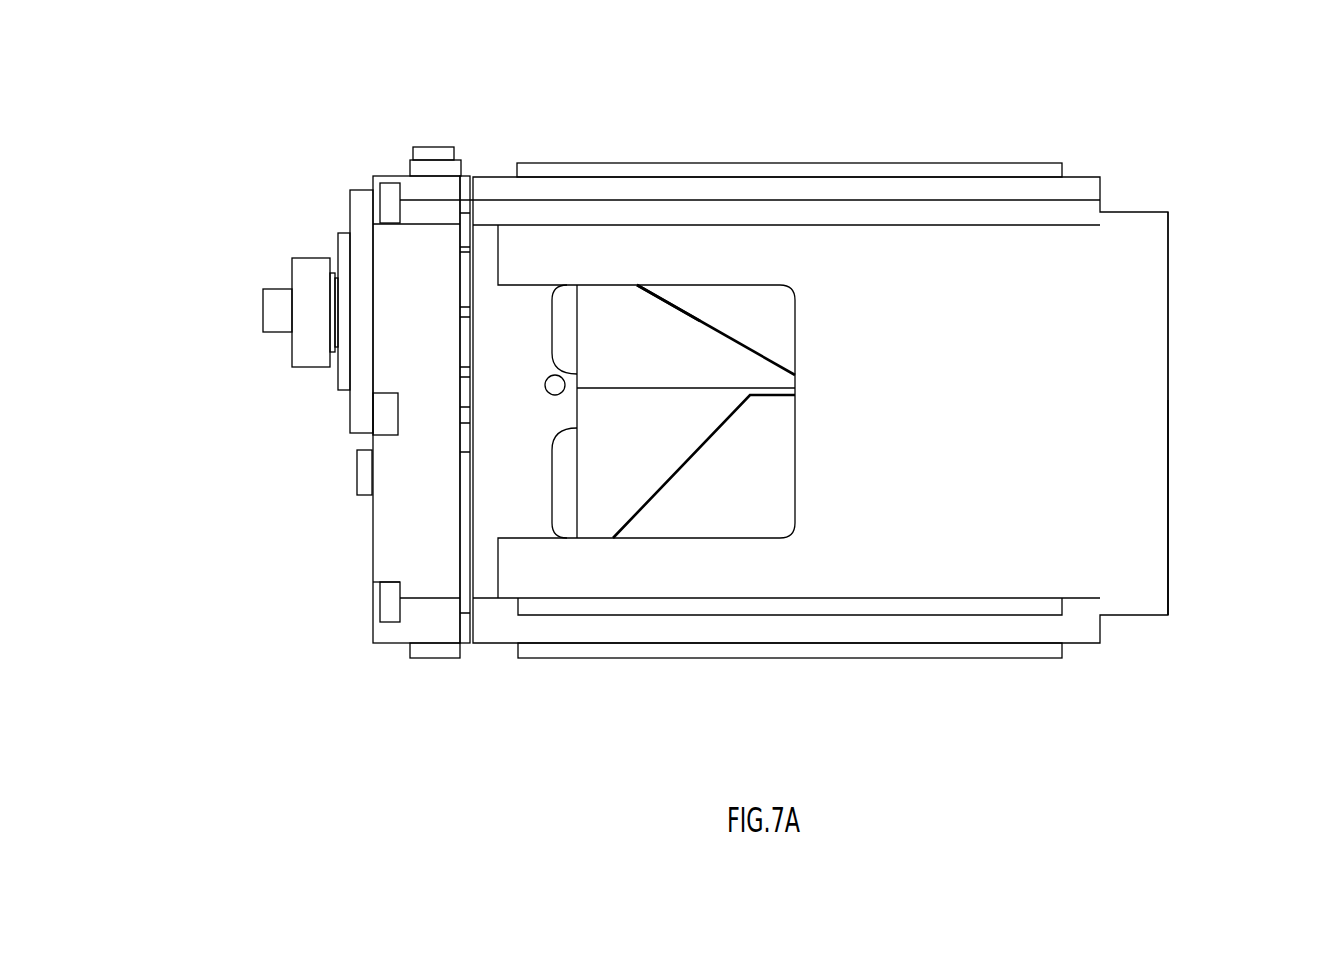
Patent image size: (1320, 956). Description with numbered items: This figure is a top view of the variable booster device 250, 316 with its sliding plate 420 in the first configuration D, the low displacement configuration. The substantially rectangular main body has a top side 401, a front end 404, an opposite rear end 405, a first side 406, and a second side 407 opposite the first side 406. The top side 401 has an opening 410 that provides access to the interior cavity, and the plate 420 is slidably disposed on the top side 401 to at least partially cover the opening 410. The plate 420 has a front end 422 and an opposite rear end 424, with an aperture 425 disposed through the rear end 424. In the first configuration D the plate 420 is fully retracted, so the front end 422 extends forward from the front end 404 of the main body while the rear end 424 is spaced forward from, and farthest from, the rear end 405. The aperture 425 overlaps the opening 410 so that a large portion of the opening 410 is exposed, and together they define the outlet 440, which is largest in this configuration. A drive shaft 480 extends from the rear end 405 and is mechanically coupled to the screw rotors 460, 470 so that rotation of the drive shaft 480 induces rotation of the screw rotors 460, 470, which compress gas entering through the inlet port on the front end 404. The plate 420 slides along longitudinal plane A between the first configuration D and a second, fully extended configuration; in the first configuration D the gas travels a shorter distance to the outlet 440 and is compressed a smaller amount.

The variable booster device 250 is at (215, 138).
The variable booster device 316 is at (293, 127).
The top side 401 is at (193, 213).
The front end 404 is at (787, 409).
The rear end 405 is at (295, 465).
The first side 406 is at (742, 143).
The second side 407 is at (700, 678).
The opening 410 is at (585, 413).
The sliding plate 420 is at (1138, 326).
The front end of plate 422 is at (1168, 447).
The rear end of plate 424 is at (497, 257).
The aperture 425 is at (636, 281).
The outlet 440 is at (555, 498).
The screw rotor 460 is at (603, 520).
The screw rotor 470 is at (629, 315).
The drive shaft 480 is at (272, 315).
The first configuration D is at (287, 128).
The longitudinal plane A is at (1101, 713).